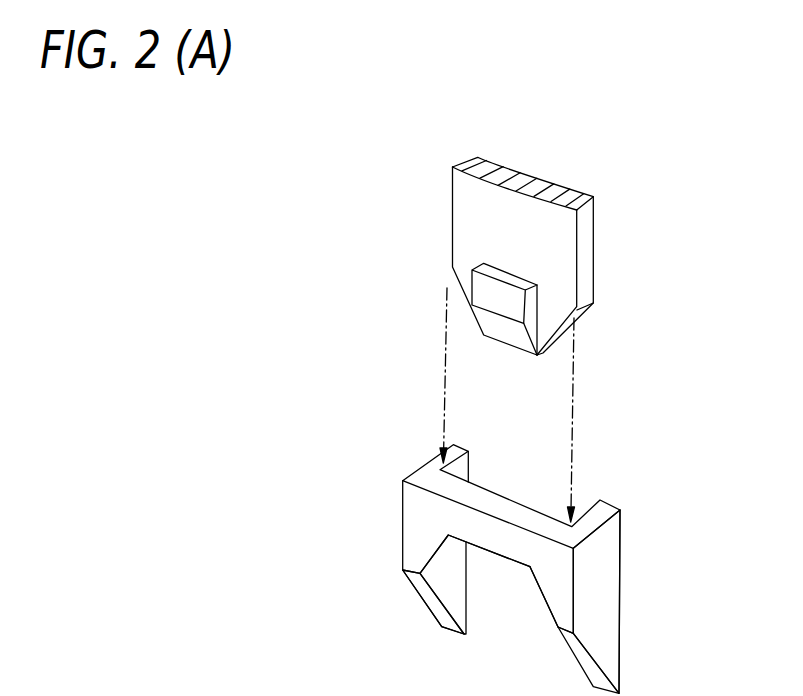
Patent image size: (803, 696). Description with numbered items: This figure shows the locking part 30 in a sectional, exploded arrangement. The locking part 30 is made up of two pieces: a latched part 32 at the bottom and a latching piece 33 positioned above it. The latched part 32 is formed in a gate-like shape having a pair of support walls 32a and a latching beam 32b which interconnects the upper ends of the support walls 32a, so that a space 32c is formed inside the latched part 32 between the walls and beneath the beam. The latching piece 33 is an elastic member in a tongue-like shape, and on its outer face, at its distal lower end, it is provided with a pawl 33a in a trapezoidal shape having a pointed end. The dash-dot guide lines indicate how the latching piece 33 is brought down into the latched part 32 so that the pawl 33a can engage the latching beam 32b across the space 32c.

The locking part 30 is at (352, 324).
The latching piece 33 is at (433, 241).
The pawl 33a is at (508, 306).
The latched part 32 is at (394, 537).
The support walls 32a is at (440, 580).
The latching beam 32b is at (495, 543).
The space 32c is at (520, 592).